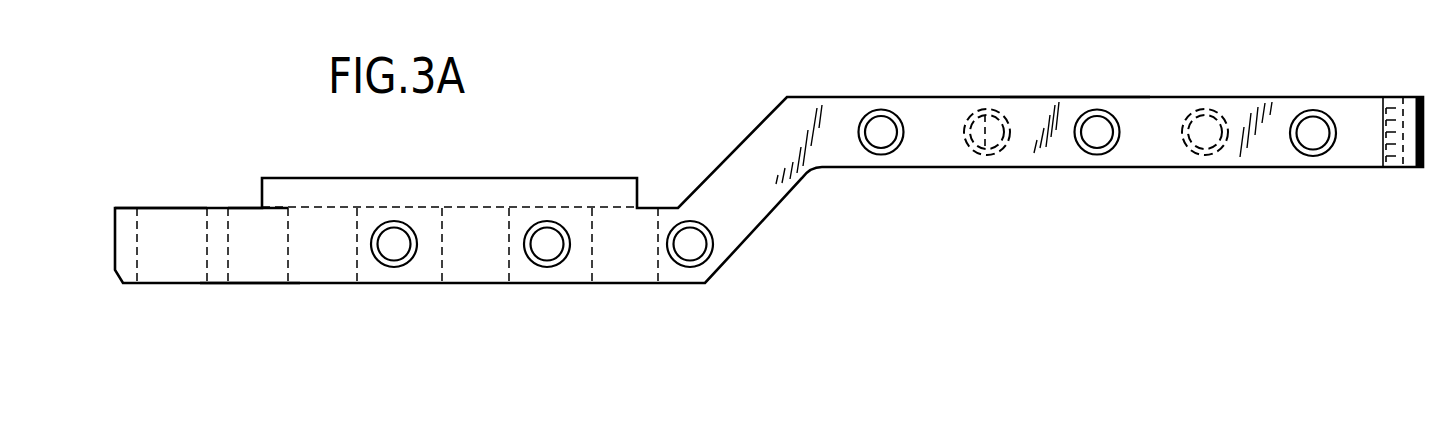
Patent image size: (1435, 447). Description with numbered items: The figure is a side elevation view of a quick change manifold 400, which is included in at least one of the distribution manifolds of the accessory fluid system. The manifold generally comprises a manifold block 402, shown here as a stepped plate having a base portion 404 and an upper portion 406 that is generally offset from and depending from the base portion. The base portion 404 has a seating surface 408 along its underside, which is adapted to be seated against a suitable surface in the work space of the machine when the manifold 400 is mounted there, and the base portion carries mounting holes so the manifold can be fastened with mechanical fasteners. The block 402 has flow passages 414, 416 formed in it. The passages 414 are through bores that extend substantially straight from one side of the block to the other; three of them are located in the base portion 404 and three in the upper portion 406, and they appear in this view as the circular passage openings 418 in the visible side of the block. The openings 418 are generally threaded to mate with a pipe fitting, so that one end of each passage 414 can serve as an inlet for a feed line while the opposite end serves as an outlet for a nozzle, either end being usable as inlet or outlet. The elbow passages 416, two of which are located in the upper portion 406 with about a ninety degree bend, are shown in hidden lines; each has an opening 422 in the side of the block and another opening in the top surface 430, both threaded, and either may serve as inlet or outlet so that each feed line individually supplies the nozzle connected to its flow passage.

The quick change manifold 400 is at (790, 210).
The manifold block 402 is at (173, 207).
The base portion 404 is at (252, 222).
The upper portion 406 is at (1082, 97).
The seating surface 408 is at (260, 283).
The flow passages 414 is at (393, 252).
The elbow flow passages 416 is at (989, 150).
The passage openings 418 is at (398, 230).
The elbow passage side opening 422 is at (985, 115).
The top surface 430 is at (1347, 97).